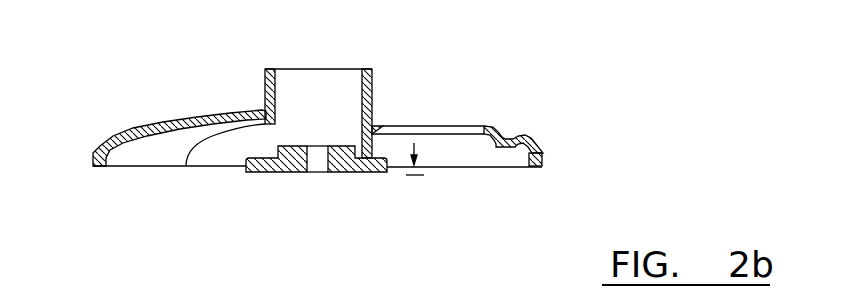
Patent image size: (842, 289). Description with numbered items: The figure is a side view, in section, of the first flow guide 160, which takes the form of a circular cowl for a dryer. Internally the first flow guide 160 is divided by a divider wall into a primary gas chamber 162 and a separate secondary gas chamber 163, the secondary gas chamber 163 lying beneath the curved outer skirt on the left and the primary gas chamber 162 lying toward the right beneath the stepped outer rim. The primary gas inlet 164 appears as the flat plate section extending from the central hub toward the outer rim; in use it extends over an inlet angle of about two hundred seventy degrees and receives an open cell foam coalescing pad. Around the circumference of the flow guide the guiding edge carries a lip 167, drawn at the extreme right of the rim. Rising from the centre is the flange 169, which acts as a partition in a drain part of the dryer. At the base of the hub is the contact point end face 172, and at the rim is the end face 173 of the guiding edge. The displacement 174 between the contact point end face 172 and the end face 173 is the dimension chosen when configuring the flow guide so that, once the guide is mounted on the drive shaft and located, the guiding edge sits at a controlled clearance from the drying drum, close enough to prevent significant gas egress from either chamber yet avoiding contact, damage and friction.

The first flow guide 160 is at (527, 98).
The primary gas chamber 162 is at (510, 157).
The secondary gas chamber 163 is at (162, 155).
The primary gas inlet 164 is at (436, 129).
The lip 167 is at (540, 166).
The flange 169 is at (265, 93).
The contact point end face 172 is at (352, 174).
The end face of the guiding edge 173 is at (534, 168).
The displacement 174 is at (414, 183).